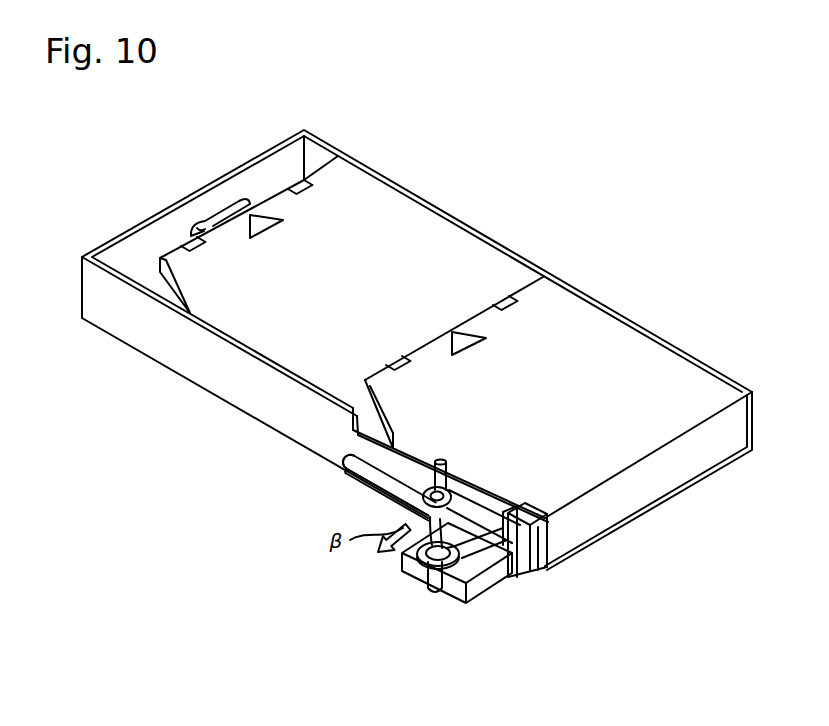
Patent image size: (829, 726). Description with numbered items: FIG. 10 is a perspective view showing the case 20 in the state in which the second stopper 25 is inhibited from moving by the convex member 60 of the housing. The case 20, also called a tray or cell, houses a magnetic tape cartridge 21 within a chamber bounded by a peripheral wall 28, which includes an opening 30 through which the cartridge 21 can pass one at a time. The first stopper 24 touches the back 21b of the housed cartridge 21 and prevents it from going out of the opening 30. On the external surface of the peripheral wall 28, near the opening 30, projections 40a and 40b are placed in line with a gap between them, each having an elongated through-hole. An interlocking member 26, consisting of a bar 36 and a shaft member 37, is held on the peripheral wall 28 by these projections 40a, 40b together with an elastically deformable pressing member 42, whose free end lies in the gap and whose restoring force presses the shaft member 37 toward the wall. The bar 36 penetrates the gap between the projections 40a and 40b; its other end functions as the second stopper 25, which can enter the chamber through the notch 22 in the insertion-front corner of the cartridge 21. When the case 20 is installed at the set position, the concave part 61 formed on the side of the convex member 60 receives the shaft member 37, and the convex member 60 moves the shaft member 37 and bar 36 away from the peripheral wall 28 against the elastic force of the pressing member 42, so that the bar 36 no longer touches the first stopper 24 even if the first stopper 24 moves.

The case 20 is at (184, 196).
The magnetic tape cartridge 21 is at (392, 207).
The back of the cartridge 21b is at (693, 448).
The notch 22 is at (165, 287).
The first stopper 24 is at (547, 528).
The second stopper 25 is at (345, 455).
The interlocking member 26 is at (345, 498).
The peripheral wall 28 is at (223, 385).
The opening 30 is at (642, 492).
The bar 36 is at (345, 467).
The shaft member 37 is at (436, 590).
The projection 40a is at (469, 477).
The projection 40b is at (503, 572).
The pressing member 42 is at (420, 517).
The convex member 60 is at (424, 590).
The concave part 61 is at (427, 578).